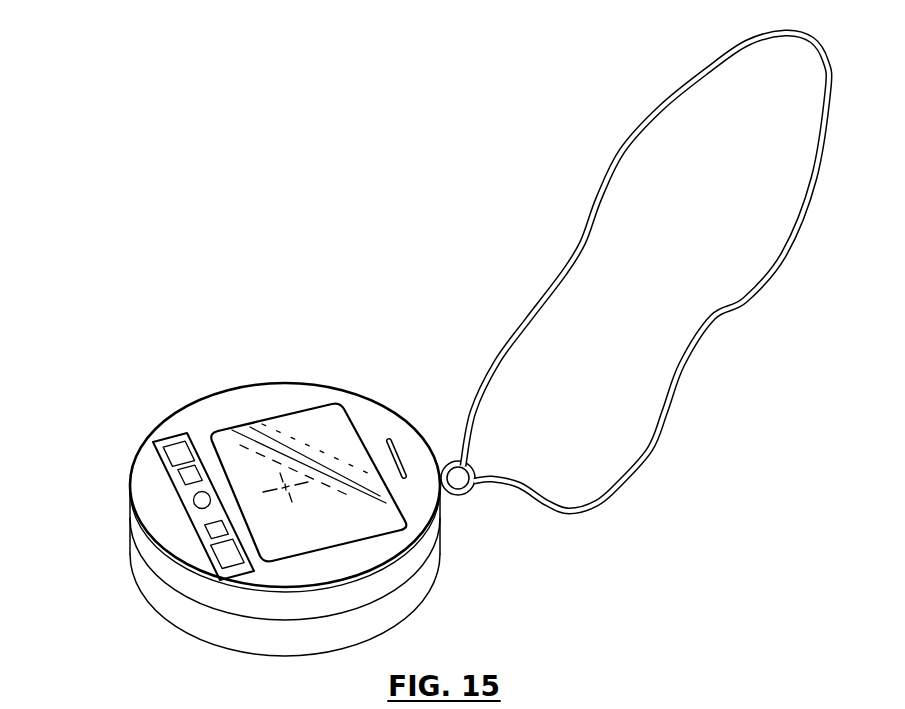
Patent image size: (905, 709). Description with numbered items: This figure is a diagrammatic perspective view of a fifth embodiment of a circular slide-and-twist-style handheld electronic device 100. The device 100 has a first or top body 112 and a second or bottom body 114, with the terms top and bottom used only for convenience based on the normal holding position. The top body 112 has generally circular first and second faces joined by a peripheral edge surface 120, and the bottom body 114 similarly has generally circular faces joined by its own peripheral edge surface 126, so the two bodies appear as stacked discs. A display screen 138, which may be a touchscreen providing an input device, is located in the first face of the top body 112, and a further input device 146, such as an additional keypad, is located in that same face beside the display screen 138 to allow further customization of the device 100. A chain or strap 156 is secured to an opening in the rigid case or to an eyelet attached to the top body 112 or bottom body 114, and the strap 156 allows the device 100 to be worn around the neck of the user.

The handheld electronic device 100 is at (136, 383).
The top body 112 is at (130, 512).
The bottom body 114 is at (130, 552).
The peripheral edge surface 120 is at (313, 619).
The peripheral edge surface 126 is at (313, 654).
The display screen 138 is at (347, 530).
The further input device 146 is at (199, 463).
The strap 156 is at (726, 312).